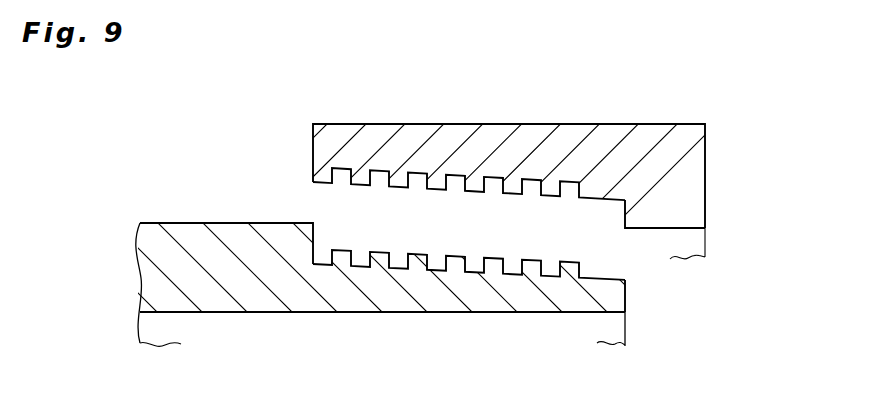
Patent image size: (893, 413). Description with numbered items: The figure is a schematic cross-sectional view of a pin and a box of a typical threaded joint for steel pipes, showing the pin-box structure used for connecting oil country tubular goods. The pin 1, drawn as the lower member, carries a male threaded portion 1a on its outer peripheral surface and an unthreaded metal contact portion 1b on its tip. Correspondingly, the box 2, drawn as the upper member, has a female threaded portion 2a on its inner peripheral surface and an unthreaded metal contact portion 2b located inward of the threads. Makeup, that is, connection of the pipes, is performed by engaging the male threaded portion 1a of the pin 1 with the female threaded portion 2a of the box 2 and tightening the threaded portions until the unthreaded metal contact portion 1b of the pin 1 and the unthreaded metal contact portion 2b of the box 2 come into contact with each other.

The pin 1 is at (395, 302).
The male threaded portion 1a is at (572, 263).
The unthreaded metal contact portion 1b is at (625, 305).
The box 2 is at (494, 137).
The female threaded portion 2a is at (363, 180).
The unthreaded metal contact portion 2b is at (614, 222).